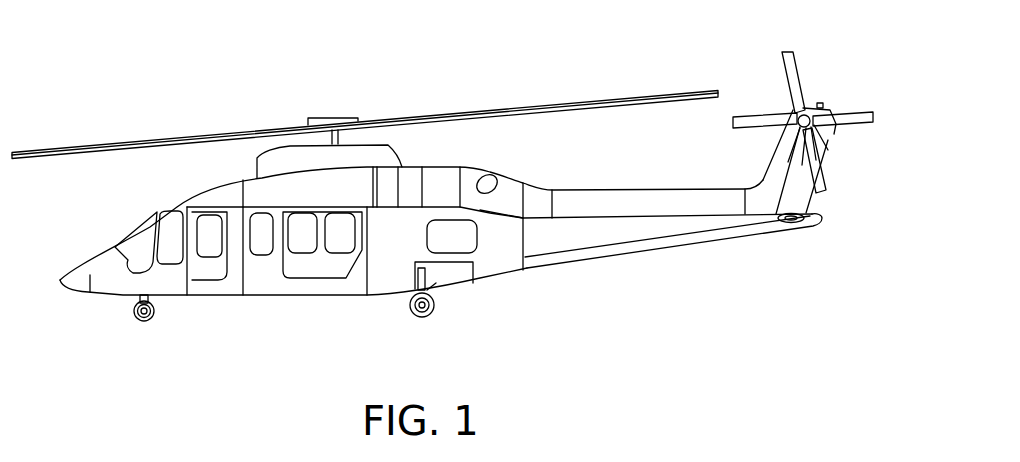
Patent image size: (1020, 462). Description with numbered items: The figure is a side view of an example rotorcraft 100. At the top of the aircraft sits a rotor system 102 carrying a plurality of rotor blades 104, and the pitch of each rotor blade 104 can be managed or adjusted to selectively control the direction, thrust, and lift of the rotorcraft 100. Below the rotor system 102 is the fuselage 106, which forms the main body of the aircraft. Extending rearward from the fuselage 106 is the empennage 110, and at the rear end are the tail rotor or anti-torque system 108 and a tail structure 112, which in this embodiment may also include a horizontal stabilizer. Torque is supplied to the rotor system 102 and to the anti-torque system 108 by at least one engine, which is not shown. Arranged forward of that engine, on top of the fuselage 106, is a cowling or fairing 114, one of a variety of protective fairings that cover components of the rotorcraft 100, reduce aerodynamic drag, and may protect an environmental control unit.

The rotorcraft 100 is at (216, 58).
The rotor system 102 is at (349, 93).
The rotor blades 104 is at (160, 136).
The fuselage 106 is at (262, 297).
The tail rotor or anti-torque system 108 is at (831, 85).
The empennage 110 is at (667, 251).
The tail structure 112 is at (790, 225).
The cowling or fairing 114 is at (207, 190).